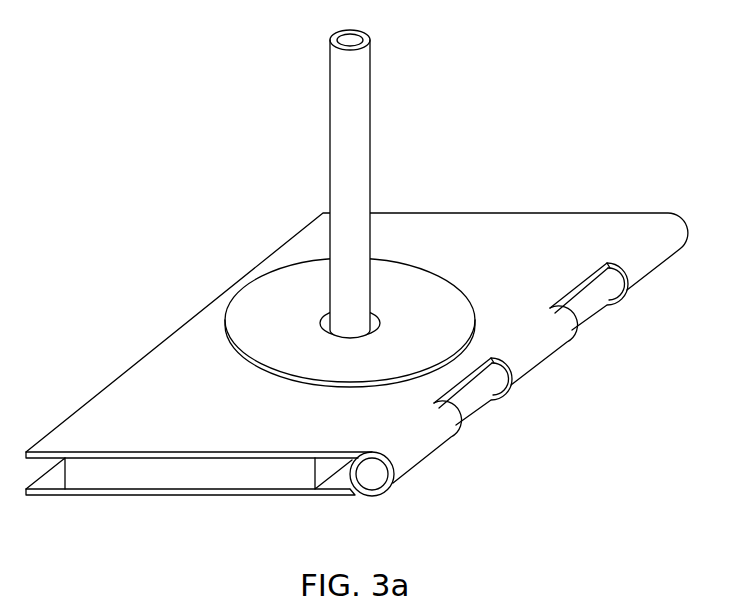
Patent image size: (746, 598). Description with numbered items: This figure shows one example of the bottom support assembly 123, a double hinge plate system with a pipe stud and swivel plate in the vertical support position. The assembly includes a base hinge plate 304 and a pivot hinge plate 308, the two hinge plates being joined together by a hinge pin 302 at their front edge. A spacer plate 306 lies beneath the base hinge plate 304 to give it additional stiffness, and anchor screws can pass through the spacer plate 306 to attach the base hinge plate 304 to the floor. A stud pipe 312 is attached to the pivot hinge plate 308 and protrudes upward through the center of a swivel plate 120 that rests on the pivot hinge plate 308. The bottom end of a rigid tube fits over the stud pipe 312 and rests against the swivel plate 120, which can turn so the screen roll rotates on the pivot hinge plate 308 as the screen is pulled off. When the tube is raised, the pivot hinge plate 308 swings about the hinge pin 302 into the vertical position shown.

The bottom support assembly 123 is at (357, 361).
The pivot hinge plate 308 is at (572, 223).
The hinge pin 302 is at (374, 471).
The spacer plate 306 is at (100, 477).
The base hinge plate 304 is at (187, 493).
The swivel plate 120 is at (440, 287).
The stud pipe 312 is at (343, 123).